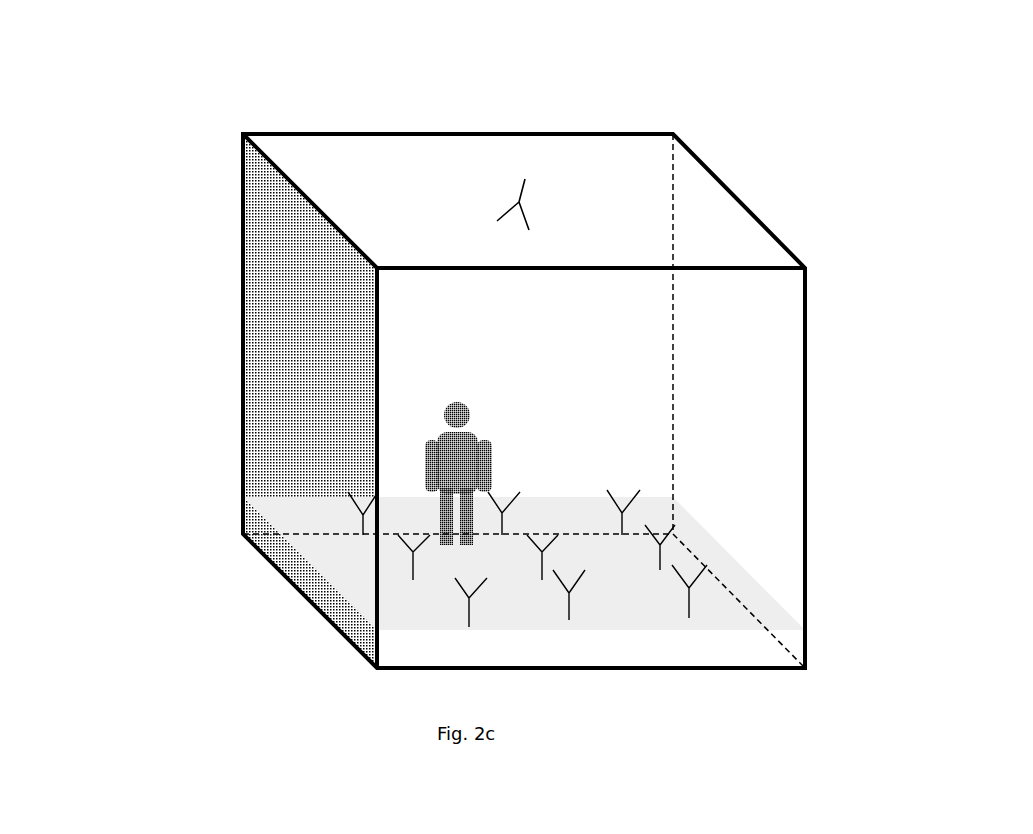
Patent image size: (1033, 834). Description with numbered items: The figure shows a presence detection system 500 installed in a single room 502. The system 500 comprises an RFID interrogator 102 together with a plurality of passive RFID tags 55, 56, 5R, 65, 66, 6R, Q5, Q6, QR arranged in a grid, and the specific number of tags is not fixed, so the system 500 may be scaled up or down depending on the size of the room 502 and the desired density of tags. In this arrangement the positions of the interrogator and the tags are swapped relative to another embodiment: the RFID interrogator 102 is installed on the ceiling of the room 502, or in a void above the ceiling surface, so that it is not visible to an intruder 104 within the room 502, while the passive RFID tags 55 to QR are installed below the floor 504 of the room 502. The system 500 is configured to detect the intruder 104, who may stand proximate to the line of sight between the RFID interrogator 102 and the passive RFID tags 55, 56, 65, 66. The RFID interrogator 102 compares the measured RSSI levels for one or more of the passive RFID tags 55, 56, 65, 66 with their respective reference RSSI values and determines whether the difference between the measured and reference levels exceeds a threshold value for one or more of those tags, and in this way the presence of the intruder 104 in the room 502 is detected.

The presence detection system 500 is at (116, 65).
The RFID interrogator 102 is at (518, 194).
The room 502 is at (524, 401).
The intruder 104 is at (508, 462).
The floor 504 is at (742, 590).
The passive RFID tag 55 is at (363, 527).
The passive RFID tag 56 is at (504, 527).
The passive RFID tag 5R is at (623, 526).
The passive RFID tag 65 is at (414, 569).
The passive RFID tag 66 is at (542, 568).
The passive RFID tag 6R is at (660, 561).
The passive RFID tag Q5 is at (471, 613).
The passive RFID tag Q6 is at (569, 607).
The passive RFID tag QR is at (689, 603).